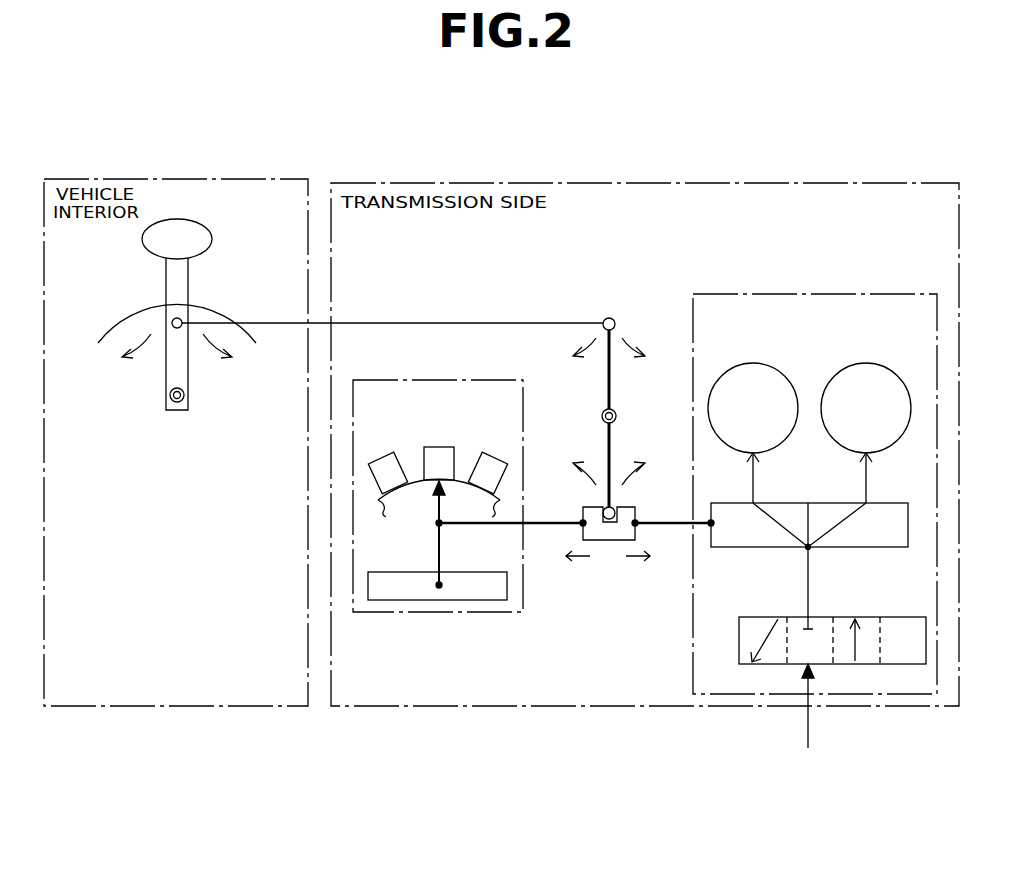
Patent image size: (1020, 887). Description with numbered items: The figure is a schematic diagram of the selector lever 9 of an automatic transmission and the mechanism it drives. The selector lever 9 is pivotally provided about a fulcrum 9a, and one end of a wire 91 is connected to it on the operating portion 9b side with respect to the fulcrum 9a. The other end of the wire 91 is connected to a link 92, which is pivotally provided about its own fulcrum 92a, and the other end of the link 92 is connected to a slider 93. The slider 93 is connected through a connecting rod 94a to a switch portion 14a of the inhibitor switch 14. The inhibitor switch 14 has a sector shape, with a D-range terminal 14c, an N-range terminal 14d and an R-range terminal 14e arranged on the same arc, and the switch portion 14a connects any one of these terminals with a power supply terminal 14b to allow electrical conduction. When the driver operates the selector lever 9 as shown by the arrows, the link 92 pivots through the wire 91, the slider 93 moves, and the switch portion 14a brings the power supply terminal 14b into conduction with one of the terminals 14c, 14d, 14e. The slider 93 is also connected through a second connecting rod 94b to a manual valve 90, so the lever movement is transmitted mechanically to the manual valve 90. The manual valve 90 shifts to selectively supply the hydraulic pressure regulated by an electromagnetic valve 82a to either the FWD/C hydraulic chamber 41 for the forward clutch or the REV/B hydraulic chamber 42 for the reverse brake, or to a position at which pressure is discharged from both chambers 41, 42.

The selector lever 9 is at (126, 263).
The fulcrum 9a is at (176, 403).
The operating portion 9b is at (212, 240).
The wire 91 is at (441, 322).
The link 92 is at (606, 386).
The fulcrum 92a is at (616, 415).
The slider 93 is at (612, 541).
The connecting rod 94a is at (471, 525).
The connecting rod 94b is at (665, 525).
The inhibitor switch 14 is at (438, 378).
The switch portion 14a is at (438, 552).
The power supply terminal 14b is at (507, 587).
The D-range terminal 14c is at (398, 458).
The N-range terminal 14d is at (440, 447).
The R-range terminal 14e is at (496, 458).
The hydraulic chamber (FWD/C hydraulic chamber) 41 is at (754, 363).
The hydraulic chamber (REV/B hydraulic chamber) 42 is at (868, 363).
The manual valve 90 is at (868, 548).
The electromagnetic valve 82a is at (739, 645).